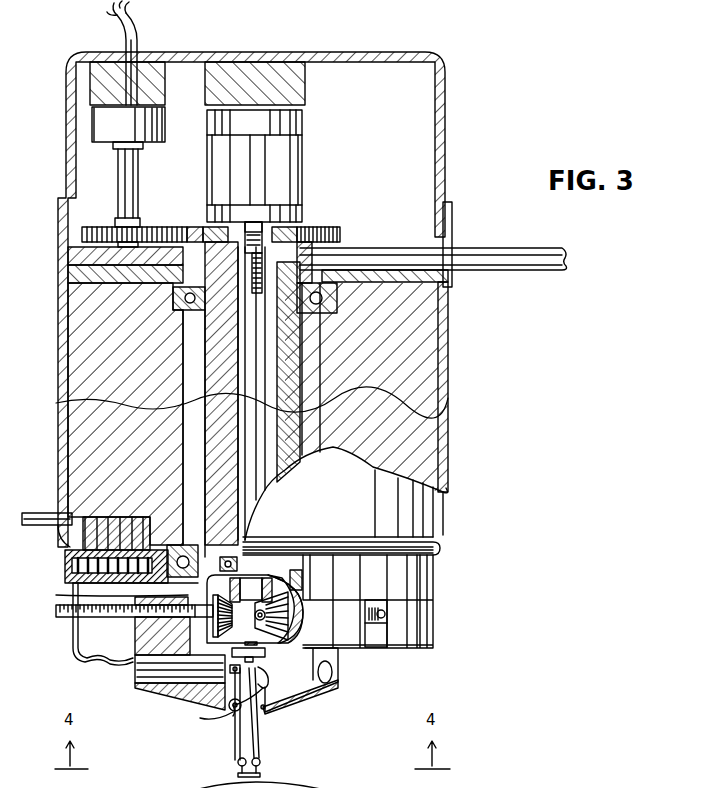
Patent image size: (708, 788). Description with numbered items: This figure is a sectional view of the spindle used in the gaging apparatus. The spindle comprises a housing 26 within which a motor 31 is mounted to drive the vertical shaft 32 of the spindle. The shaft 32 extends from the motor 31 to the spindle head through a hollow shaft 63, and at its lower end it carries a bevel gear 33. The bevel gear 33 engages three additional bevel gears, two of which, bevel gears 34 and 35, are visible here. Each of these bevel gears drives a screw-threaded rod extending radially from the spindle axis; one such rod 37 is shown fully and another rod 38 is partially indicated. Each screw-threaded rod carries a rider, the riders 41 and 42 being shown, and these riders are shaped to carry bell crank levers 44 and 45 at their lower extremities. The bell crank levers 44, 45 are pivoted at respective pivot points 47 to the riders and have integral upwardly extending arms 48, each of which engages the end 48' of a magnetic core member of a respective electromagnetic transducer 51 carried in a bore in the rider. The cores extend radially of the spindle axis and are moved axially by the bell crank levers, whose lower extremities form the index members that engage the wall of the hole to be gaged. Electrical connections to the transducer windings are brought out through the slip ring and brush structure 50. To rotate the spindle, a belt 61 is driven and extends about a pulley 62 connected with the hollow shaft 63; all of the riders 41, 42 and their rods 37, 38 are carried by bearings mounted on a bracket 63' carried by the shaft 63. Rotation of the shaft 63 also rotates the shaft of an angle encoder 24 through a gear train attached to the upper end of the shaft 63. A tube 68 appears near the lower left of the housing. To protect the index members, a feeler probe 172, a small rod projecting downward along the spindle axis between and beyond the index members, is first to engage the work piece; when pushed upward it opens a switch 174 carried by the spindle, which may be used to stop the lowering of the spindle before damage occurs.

The angle encoder 24 is at (98, 123).
The housing 26 is at (446, 194).
The motor 31 is at (302, 170).
The vertical shaft 32 is at (268, 353).
The bevel gear 33 is at (283, 590).
The bevel gear 34 is at (225, 624).
The bevel gear 35 is at (290, 632).
The screw-threaded rod 37 is at (68, 615).
The screw-threaded rod 38 is at (382, 616).
The rider 41 is at (133, 660).
The rider 42 is at (338, 680).
The bell crank lever 44 is at (236, 735).
The bell crank lever 45 is at (259, 736).
The pivot point 47 is at (232, 712).
The upwardly extending arm 48 is at (217, 690).
The end of magnetic core member 48' is at (262, 686).
The slip ring and brush structure 50 is at (80, 578).
The electromagnetic transducer 51 is at (150, 672).
The belt 61 is at (374, 248).
The pulley 62 is at (310, 243).
The hollow shaft 63 is at (136, 420).
The bracket 63' is at (113, 597).
The tube 68 is at (42, 526).
The feeler probe 172 is at (241, 758).
The switch 174 is at (265, 653).